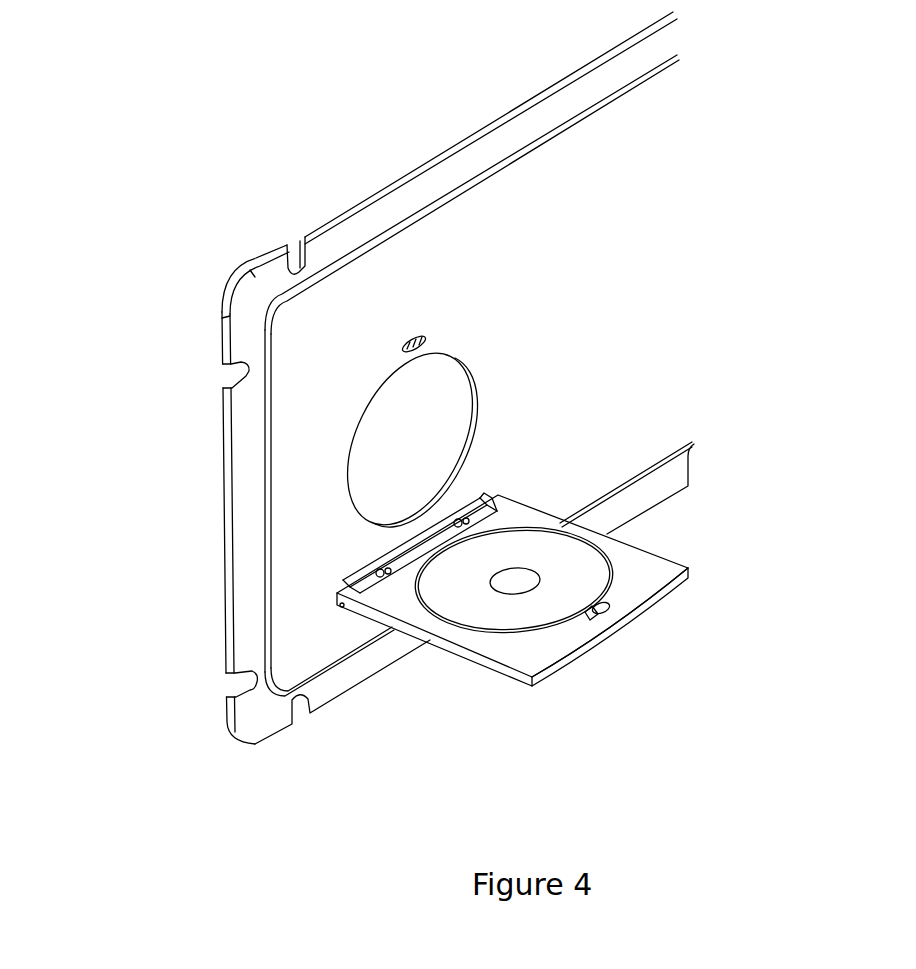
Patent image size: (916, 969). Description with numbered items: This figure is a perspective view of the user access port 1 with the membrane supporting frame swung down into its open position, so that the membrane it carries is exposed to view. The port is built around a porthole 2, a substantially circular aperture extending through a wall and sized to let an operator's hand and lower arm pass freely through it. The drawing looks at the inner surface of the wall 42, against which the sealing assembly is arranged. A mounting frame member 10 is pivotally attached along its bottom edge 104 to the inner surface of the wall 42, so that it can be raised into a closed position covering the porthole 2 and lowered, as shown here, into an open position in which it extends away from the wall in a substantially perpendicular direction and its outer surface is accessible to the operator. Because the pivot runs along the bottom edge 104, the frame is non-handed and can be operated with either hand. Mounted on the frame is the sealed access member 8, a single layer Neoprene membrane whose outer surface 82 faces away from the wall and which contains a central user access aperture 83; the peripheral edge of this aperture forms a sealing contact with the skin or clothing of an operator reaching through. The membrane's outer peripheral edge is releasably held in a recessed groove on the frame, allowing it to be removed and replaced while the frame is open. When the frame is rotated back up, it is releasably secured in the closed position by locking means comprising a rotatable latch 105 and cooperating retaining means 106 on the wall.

The user access port 1 is at (262, 165).
The porthole 2 is at (478, 397).
The sealed access member 8 is at (585, 567).
The mounting frame member 10 is at (680, 584).
The inner surface of the wall 42 is at (341, 337).
The outer surface of the sealed access member 82 is at (486, 612).
The user access aperture 83 is at (522, 580).
The bottom edge of the mounting frame member 104 is at (356, 583).
The rotatable latch 105 is at (600, 610).
The retaining means 106 is at (420, 340).